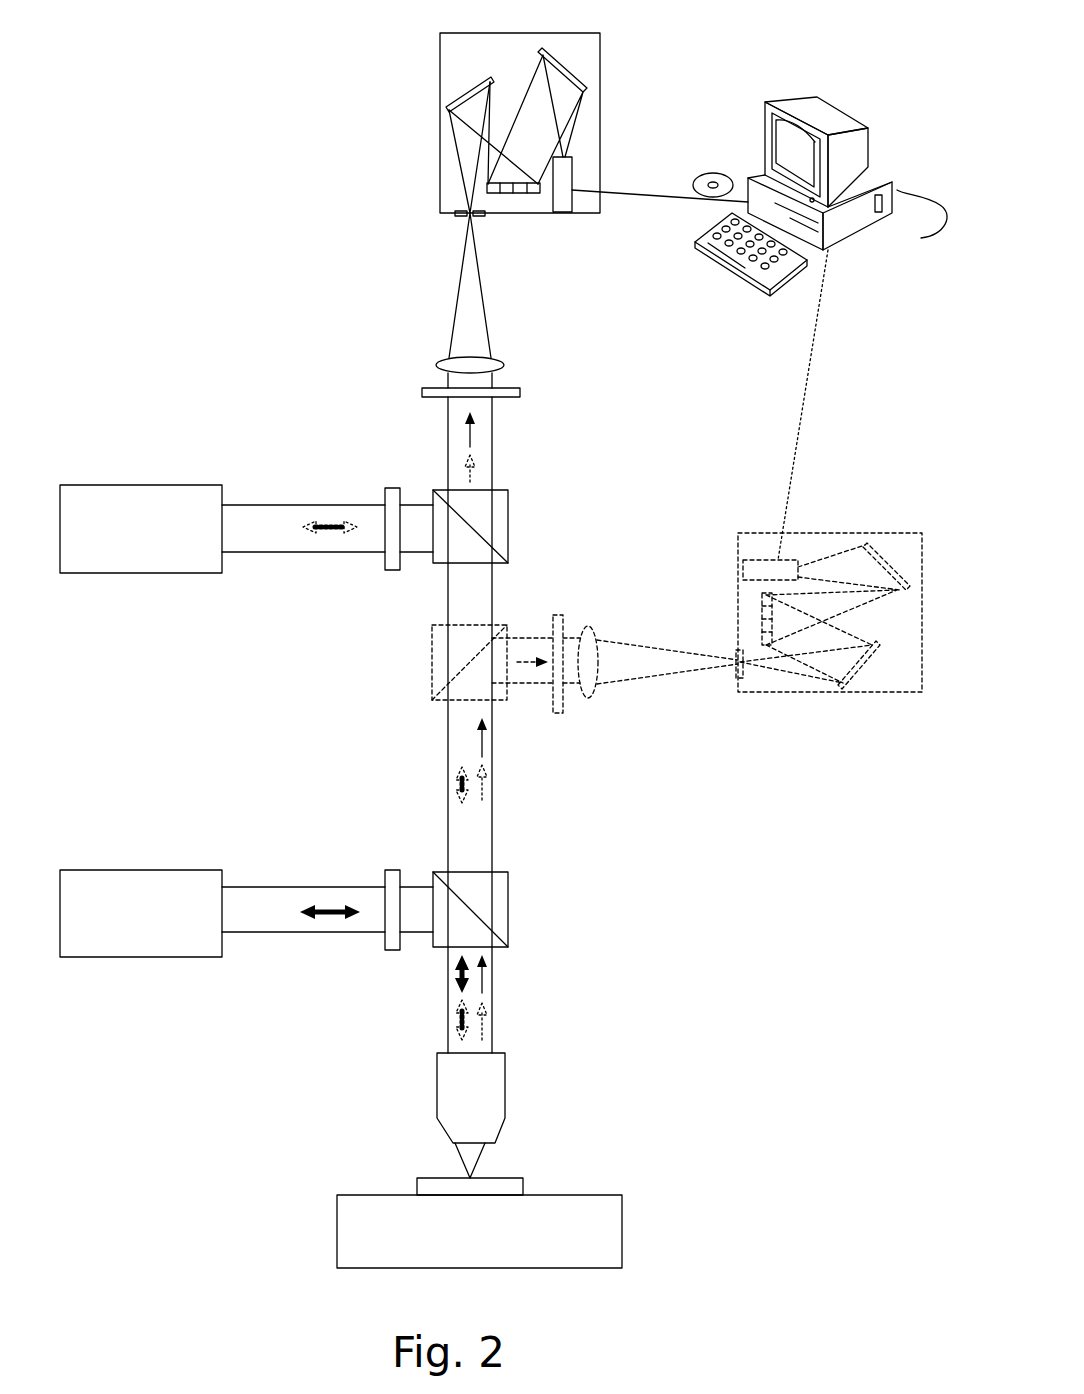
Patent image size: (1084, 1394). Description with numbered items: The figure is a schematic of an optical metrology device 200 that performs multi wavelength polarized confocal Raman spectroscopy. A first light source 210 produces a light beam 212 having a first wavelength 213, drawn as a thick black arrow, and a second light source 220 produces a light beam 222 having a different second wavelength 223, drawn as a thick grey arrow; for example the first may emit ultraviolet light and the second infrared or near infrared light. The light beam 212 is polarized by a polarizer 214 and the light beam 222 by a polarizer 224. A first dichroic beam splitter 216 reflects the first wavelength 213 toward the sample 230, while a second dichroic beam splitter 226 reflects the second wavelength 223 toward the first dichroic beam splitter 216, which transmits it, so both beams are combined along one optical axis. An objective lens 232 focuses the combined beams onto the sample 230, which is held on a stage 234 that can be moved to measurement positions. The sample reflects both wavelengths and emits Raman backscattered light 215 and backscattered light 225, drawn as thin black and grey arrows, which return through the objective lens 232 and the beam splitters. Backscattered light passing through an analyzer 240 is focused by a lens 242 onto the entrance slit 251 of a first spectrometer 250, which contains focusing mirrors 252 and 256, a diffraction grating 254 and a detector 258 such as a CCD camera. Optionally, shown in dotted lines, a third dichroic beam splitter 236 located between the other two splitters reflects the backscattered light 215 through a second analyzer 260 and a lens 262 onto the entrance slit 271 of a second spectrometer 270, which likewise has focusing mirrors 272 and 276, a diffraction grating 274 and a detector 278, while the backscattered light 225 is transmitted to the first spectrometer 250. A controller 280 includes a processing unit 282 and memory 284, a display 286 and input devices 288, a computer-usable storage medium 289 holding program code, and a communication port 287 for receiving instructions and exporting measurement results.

The optical metrology device 200 is at (133, 138).
The first light source 210 is at (122, 870).
The light beam 212 is at (258, 887).
The first wavelength 213 is at (318, 917).
The polarizer 214 is at (393, 870).
The backscattered light 215 is at (470, 435).
The first dichroic beam splitter 216 is at (508, 907).
The second light source 220 is at (140, 485).
The light beam 222 is at (253, 505).
The second wavelength 223 is at (317, 533).
The polarizer 224 is at (393, 488).
The backscattered light 225 is at (470, 480).
The second dichroic beam splitter 226 is at (508, 523).
The sample 230 is at (523, 1188).
The objective lens 232 is at (505, 1098).
The stage 234 is at (622, 1232).
The third dichroic beam splitter 236 is at (432, 660).
The analyzer 240 is at (422, 392).
The lens 242 is at (435, 358).
The first spectrometer 250 is at (598, 33).
The entrance slit 251 is at (455, 214).
The focusing mirror 252 is at (447, 100).
The diffraction grating 254 is at (519, 194).
The focusing mirror 256 is at (573, 73).
The detector 258 is at (572, 205).
The second analyzer 260 is at (562, 614).
The lens 262 is at (591, 700).
The second spectrometer 270 is at (822, 533).
The entrance slit 271 is at (738, 678).
The focusing mirror 272 is at (852, 690).
The diffraction grating 274 is at (762, 617).
The focusing mirror 276 is at (885, 562).
The detector 278 is at (757, 560).
The controller 280 is at (712, 109).
The processing unit 282 is at (868, 160).
The memory 284 is at (838, 228).
The display 286 is at (768, 100).
The communication port 287 is at (917, 222).
The input devices 288 is at (766, 283).
The computer-usable storage medium 289 is at (693, 178).